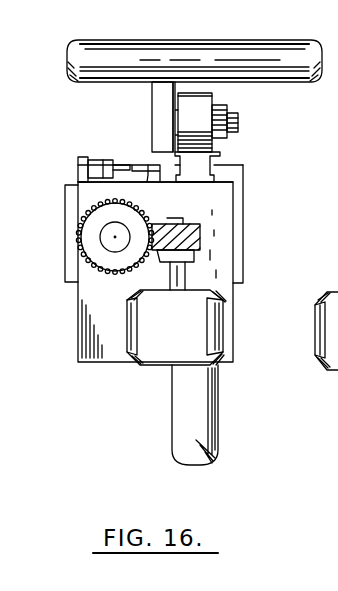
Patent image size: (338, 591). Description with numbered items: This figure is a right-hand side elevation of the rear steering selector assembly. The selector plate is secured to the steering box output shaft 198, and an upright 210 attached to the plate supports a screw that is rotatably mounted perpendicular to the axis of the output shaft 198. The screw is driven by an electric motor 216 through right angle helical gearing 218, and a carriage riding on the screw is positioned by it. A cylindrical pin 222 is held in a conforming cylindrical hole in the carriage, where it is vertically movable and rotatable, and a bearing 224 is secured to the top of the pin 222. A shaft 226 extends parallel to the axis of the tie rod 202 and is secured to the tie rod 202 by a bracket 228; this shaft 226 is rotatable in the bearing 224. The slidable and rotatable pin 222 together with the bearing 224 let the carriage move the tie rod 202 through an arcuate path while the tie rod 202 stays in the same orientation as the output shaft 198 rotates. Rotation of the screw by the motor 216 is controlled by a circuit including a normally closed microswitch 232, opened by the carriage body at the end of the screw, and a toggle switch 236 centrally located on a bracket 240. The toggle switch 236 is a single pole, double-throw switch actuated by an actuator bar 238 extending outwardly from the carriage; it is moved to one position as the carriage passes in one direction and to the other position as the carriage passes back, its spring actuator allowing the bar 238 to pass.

The tie rod 202 is at (190, 48).
The bracket 228 is at (152, 118).
The bearing 224 is at (205, 106).
The shaft 226 is at (238, 122).
The cylindrical pin 222 is at (215, 158).
The microswitch 232 is at (197, 171).
The upright 210 is at (220, 210).
The actuator bar 238 is at (148, 182).
The toggle switch 236 is at (103, 160).
The bracket 240 is at (78, 160).
The right angle helical gearing 218 is at (110, 284).
The electric motor 216 is at (157, 350).
The steering box output shaft 198 is at (215, 398).